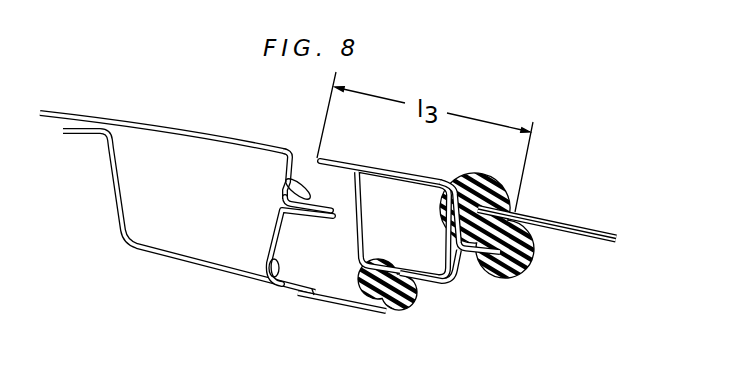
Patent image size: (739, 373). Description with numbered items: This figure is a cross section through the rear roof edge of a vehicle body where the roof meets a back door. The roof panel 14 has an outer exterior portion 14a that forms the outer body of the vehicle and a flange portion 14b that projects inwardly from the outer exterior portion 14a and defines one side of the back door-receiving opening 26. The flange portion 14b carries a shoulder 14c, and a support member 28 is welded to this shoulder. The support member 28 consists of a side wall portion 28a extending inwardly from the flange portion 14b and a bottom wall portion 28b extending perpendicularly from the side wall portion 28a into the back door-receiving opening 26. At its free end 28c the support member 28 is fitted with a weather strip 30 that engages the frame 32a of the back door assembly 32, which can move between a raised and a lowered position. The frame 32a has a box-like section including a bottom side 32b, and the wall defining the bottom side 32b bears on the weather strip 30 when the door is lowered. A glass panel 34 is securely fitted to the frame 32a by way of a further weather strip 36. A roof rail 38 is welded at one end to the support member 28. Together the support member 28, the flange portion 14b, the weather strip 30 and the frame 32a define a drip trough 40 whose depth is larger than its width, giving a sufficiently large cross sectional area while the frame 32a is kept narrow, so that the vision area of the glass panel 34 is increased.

The roof panel 14 is at (185, 145).
The outer exterior portion 14a is at (197, 130).
The flange portion 14b is at (289, 149).
The shoulder 14c is at (285, 181).
The back door-receiving opening 26 is at (590, 280).
The support member 28 is at (265, 227).
The side wall portion 28a is at (277, 283).
The bottom wall portion 28b is at (323, 295).
The free end 28c is at (390, 303).
The weather strip 30 is at (413, 297).
The back door assembly 32 is at (533, 203).
The frame 32a is at (408, 173).
The bottom side 32b is at (430, 280).
The glass panel 34 is at (585, 222).
The weather strip 36 is at (528, 267).
The roof rail 38 is at (170, 258).
The drip trough 40 is at (350, 280).